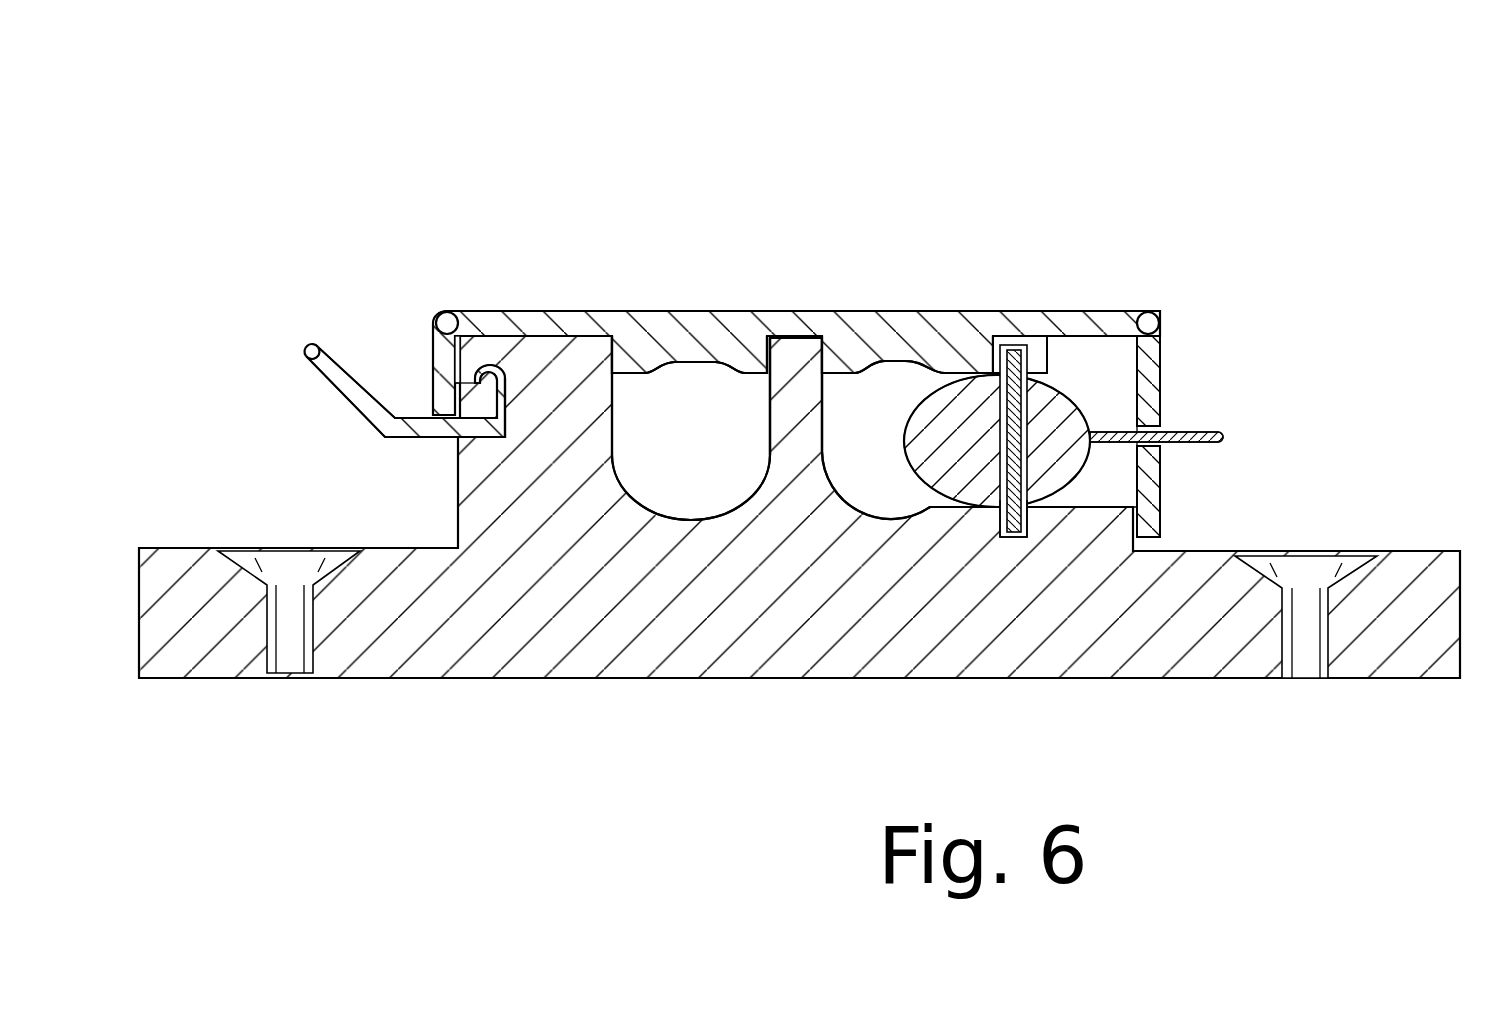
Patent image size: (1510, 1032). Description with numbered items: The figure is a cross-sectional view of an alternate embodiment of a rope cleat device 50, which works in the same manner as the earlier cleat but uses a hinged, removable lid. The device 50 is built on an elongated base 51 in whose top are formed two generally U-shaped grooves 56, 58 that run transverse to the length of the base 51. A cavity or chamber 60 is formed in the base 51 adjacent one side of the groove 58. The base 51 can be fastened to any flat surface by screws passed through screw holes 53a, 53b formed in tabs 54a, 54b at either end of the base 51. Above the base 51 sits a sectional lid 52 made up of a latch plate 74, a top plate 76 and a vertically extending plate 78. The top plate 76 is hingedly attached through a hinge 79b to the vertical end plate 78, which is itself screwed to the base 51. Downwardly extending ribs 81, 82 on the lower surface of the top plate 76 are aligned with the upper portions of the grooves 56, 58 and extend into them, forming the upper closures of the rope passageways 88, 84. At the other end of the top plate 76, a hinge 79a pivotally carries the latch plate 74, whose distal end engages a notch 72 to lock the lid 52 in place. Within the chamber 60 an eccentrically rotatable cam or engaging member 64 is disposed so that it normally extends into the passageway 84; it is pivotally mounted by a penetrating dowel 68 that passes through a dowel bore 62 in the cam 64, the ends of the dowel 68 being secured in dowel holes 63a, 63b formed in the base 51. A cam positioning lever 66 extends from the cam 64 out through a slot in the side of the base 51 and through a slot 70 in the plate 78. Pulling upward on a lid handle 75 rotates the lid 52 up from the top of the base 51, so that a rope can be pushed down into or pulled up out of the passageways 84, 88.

The rope cleat device 50 is at (819, 401).
The elongated base 51 is at (1045, 350).
The sectional lid 52 is at (560, 303).
The screw hole 53a is at (1338, 655).
The screw hole 53b is at (315, 650).
The tab 54a is at (1410, 552).
The tab 54b is at (190, 548).
The groove 56 is at (697, 518).
The groove 58 is at (875, 505).
The cavity or chamber 60 is at (1117, 395).
The dowel bore 62 is at (960, 510).
The dowel hole 63a is at (1025, 452).
The dowel hole 63b is at (1027, 537).
The cam or engaging member 64 is at (1075, 503).
The cam positioning lever 66 is at (1225, 437).
The penetrating dowel 68 is at (1000, 345).
The slot 70 is at (1191, 436).
The notch 72 is at (465, 437).
The latch plate 74 is at (359, 368).
The lid handle 75 is at (322, 352).
The top plate 76 is at (788, 330).
The vertically extending plate 78 is at (1152, 470).
The hinge 79a is at (445, 311).
The hinge 79b is at (1162, 322).
The rib 81 is at (658, 334).
The rib 82 is at (867, 332).
The passageway 84 is at (893, 396).
The passageway 88 is at (718, 408).